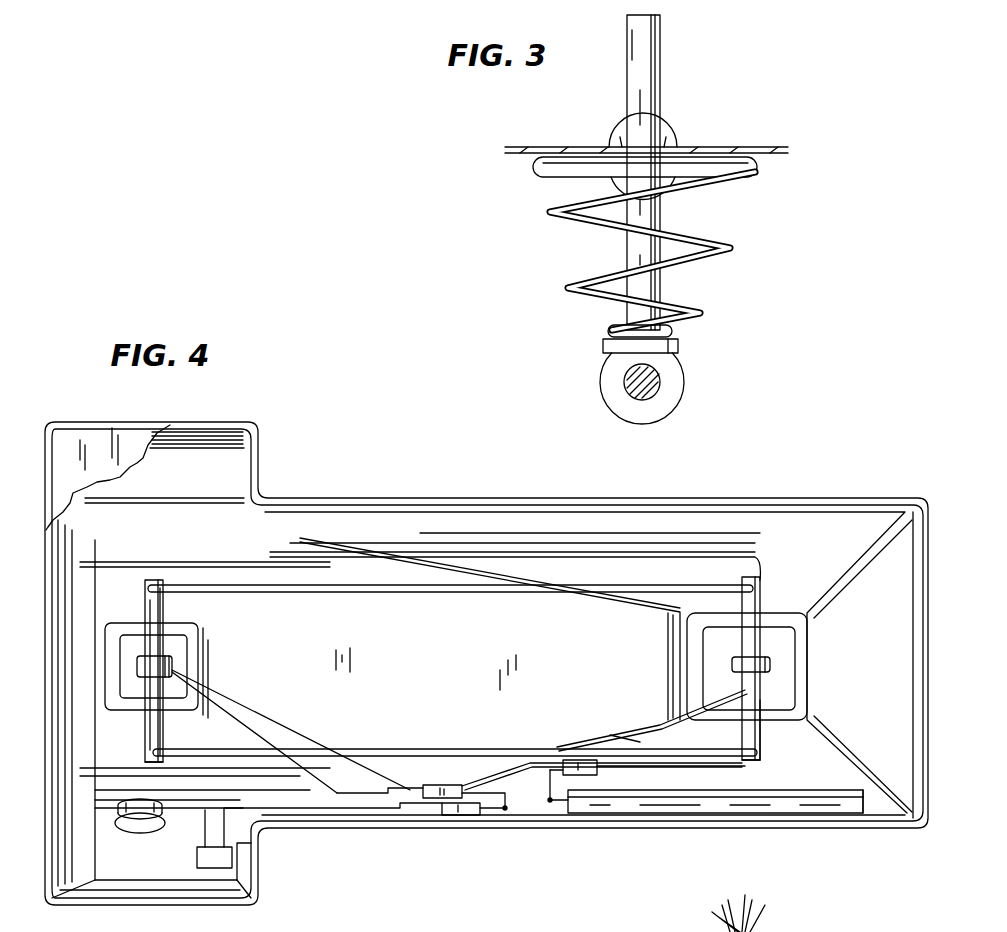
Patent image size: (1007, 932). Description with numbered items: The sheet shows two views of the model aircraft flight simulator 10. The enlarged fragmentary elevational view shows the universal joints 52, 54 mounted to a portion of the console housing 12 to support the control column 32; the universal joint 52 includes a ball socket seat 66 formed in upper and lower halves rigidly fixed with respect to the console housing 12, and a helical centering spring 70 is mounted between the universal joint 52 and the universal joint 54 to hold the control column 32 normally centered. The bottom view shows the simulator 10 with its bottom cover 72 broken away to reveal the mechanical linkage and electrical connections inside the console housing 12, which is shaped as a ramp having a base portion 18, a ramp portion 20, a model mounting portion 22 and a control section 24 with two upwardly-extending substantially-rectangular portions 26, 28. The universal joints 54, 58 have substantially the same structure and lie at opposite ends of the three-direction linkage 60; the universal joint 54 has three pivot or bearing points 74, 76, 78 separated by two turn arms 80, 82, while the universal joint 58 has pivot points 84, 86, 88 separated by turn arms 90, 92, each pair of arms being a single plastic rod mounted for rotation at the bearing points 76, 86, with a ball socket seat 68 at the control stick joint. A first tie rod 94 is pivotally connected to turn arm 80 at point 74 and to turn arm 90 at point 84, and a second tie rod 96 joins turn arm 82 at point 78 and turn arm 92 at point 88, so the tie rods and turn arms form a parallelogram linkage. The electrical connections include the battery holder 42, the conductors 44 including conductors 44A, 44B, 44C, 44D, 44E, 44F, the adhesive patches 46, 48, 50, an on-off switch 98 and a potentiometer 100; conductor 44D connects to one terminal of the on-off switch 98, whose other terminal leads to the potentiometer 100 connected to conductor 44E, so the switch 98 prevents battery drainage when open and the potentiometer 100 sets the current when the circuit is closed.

In FIG. 4, the model aircraft flight simulator 10 is at (383, 466).
In FIG. 3, the console housing 12 is at (772, 147).
In FIG. 4, the console housing 12 is at (500, 494).
In FIG. 4, the base portion 18 is at (660, 828).
In FIG. 4, the ramp portion 20 is at (429, 680).
In FIG. 4, the model mounting portion 22 is at (731, 658).
In FIG. 4, the control section 24 is at (103, 642).
In FIG. 4, the upwardly-extending substantially-rectangular portion 26 is at (138, 905).
In FIG. 4, the upwardly-extending substantially-rectangular portion 28 is at (168, 425).
In FIG. 3, the control column 32 is at (660, 66).
In FIG. 4, the battery holder 42 is at (868, 815).
In FIG. 4, the conductors 44 is at (633, 726).
In FIG. 4, the conductor 44A is at (252, 736).
In FIG. 4, the conductor 44B is at (296, 725).
In FIG. 4, the conductor 44C is at (570, 782).
In FIG. 4, the conductor 44D is at (340, 800).
In FIG. 4, the conductor 44E is at (313, 808).
In FIG. 4, the conductor 44F is at (533, 800).
In FIG. 4, the adhesive patch 46 is at (580, 740).
In FIG. 4, the adhesive patch 48 is at (438, 798).
In FIG. 4, the adhesive patch 50 is at (472, 815).
In FIG. 3, the universal joint 52 is at (533, 185).
In FIG. 3, the universal joint 54 is at (686, 404).
In FIG. 4, the universal joint 54 is at (665, 678).
In FIG. 4, the universal joint 58 is at (218, 655).
In FIG. 4, the three-direction linkage 60 is at (483, 551).
In FIG. 3, the ball socket seat 66 is at (670, 132).
In FIG. 4, the ball socket seat 66 is at (768, 672).
In FIG. 4, the ball socket seat 68 is at (130, 667).
In FIG. 3, the helical centering spring 70 is at (733, 236).
In FIG. 4, the bottom cover 72 is at (133, 430).
In FIG. 4, the pivot point 74 is at (760, 758).
In FIG. 4, the bearing point 76 is at (770, 664).
In FIG. 4, the pivot point 78 is at (760, 585).
In FIG. 4, the turn arm 80 is at (760, 726).
In FIG. 4, the turn arm 82 is at (795, 625).
In FIG. 4, the pivot point 84 is at (145, 755).
In FIG. 4, the bearing point 86 is at (140, 676).
In FIG. 4, the pivot point 88 is at (145, 598).
In FIG. 4, the turn arm 90 is at (145, 735).
In FIG. 4, the turn arm 92 is at (163, 612).
In FIG. 4, the first tie rod 94 is at (406, 749).
In FIG. 4, the second tie rod 96 is at (328, 592).
In FIG. 4, the on-off switch 98 is at (150, 830).
In FIG. 4, the potentiometer 100 is at (197, 858).